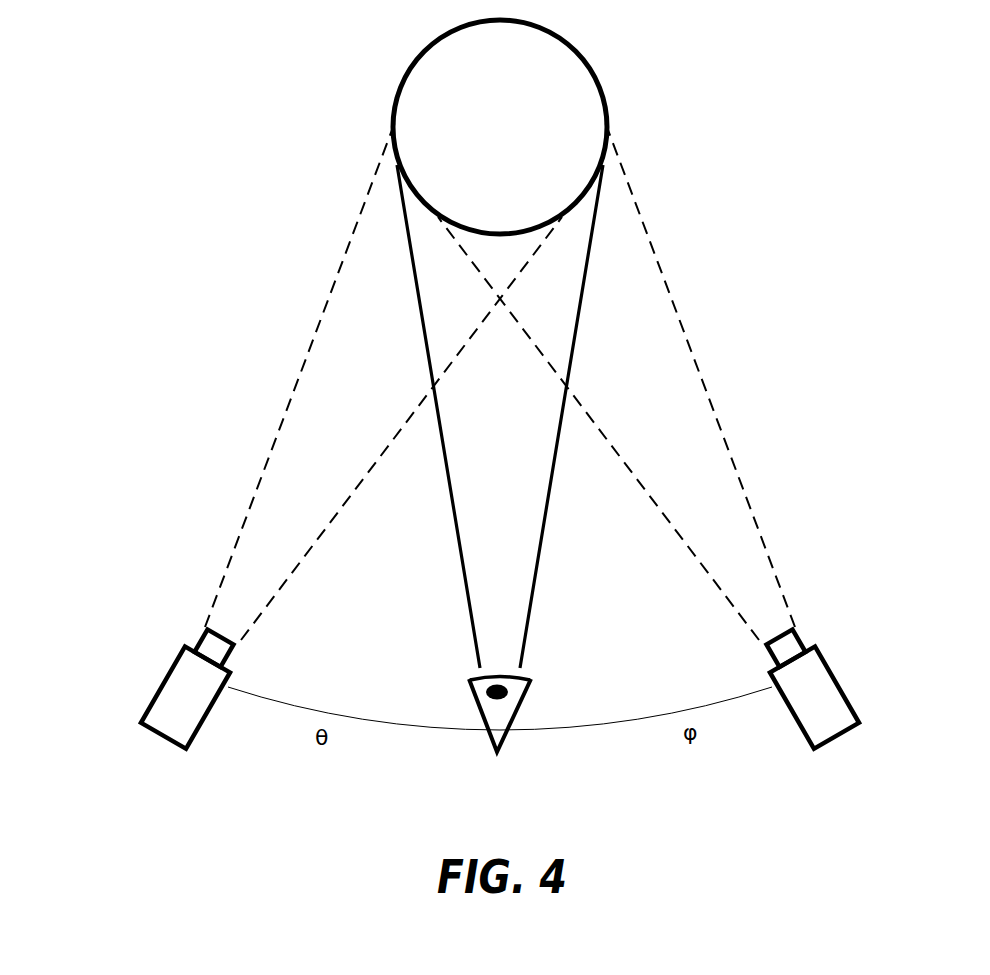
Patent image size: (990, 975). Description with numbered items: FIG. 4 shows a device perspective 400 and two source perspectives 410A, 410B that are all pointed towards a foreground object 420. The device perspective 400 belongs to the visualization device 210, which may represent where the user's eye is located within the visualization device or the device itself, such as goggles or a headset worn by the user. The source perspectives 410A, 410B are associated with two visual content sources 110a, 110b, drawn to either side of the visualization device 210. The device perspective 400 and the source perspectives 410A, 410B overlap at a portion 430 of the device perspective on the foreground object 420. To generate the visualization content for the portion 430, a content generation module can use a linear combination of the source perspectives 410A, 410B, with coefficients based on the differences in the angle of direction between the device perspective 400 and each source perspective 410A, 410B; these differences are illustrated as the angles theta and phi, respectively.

The visual content source 110a is at (160, 681).
The visual content source 110b is at (840, 681).
The visualization device 210 is at (506, 731).
The device perspective 400 is at (500, 416).
The source perspective 410A is at (383, 381).
The source perspective 410B is at (616, 381).
The foreground object 420 is at (500, 127).
The portion of the device perspective 430 is at (495, 234).